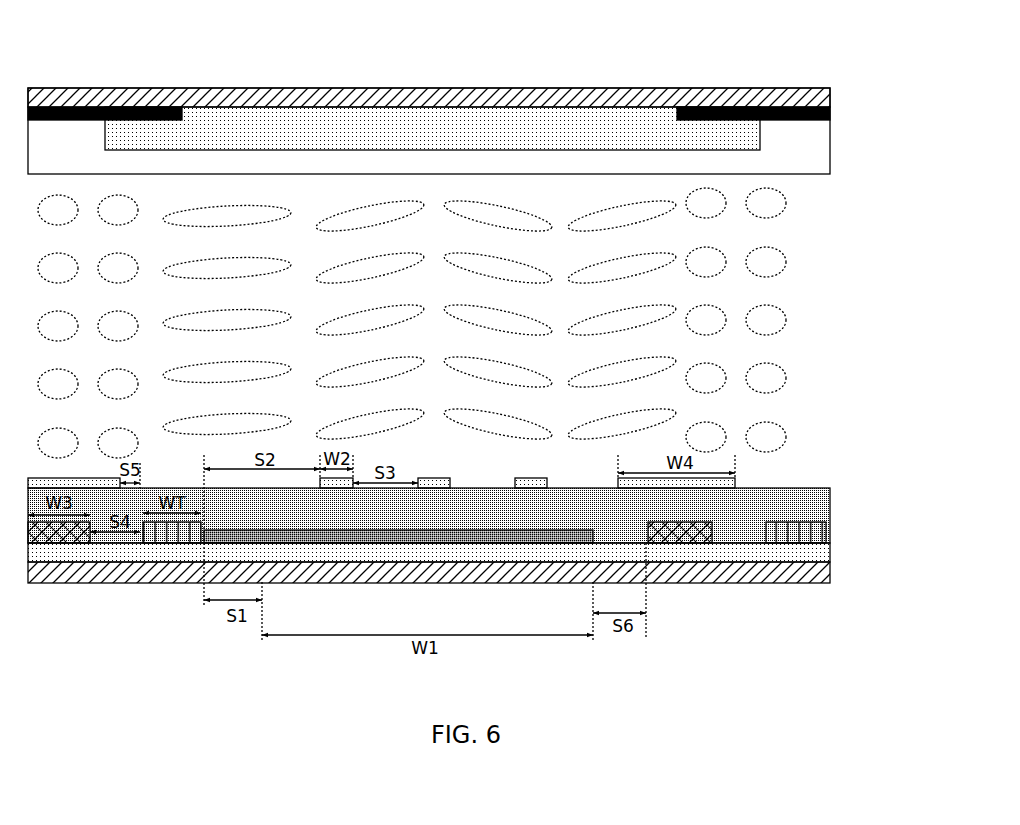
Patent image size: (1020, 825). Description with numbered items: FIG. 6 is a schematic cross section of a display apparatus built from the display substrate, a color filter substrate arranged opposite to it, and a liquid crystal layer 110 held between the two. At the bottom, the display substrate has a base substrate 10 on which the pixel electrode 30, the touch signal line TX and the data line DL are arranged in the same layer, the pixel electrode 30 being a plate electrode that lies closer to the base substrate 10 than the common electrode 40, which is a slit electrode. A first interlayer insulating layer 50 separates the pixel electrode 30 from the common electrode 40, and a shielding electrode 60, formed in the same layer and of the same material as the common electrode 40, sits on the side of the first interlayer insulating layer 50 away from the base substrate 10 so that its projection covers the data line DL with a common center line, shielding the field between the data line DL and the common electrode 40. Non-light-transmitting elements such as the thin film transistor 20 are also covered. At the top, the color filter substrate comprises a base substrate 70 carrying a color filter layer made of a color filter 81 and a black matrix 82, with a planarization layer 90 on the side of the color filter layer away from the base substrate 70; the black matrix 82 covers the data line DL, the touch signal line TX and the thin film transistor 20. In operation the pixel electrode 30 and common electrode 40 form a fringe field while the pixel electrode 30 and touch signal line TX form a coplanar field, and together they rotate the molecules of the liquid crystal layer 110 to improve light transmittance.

The base substrate 10 is at (812, 572).
The thin film transistor 20 is at (672, 550).
The pixel electrode 30 is at (505, 538).
The common electrode 40 is at (433, 483).
The first interlayer insulating layer 50 is at (291, 513).
The shielding electrode 60 is at (723, 483).
The base substrate 70 is at (653, 98).
The color filter 81 is at (352, 120).
The black matrix 82 is at (105, 120).
The planarization layer 90 is at (784, 130).
The liquid crystal layer 110 is at (765, 347).
The data line DL is at (60, 535).
The touch signal line TX is at (172, 533).